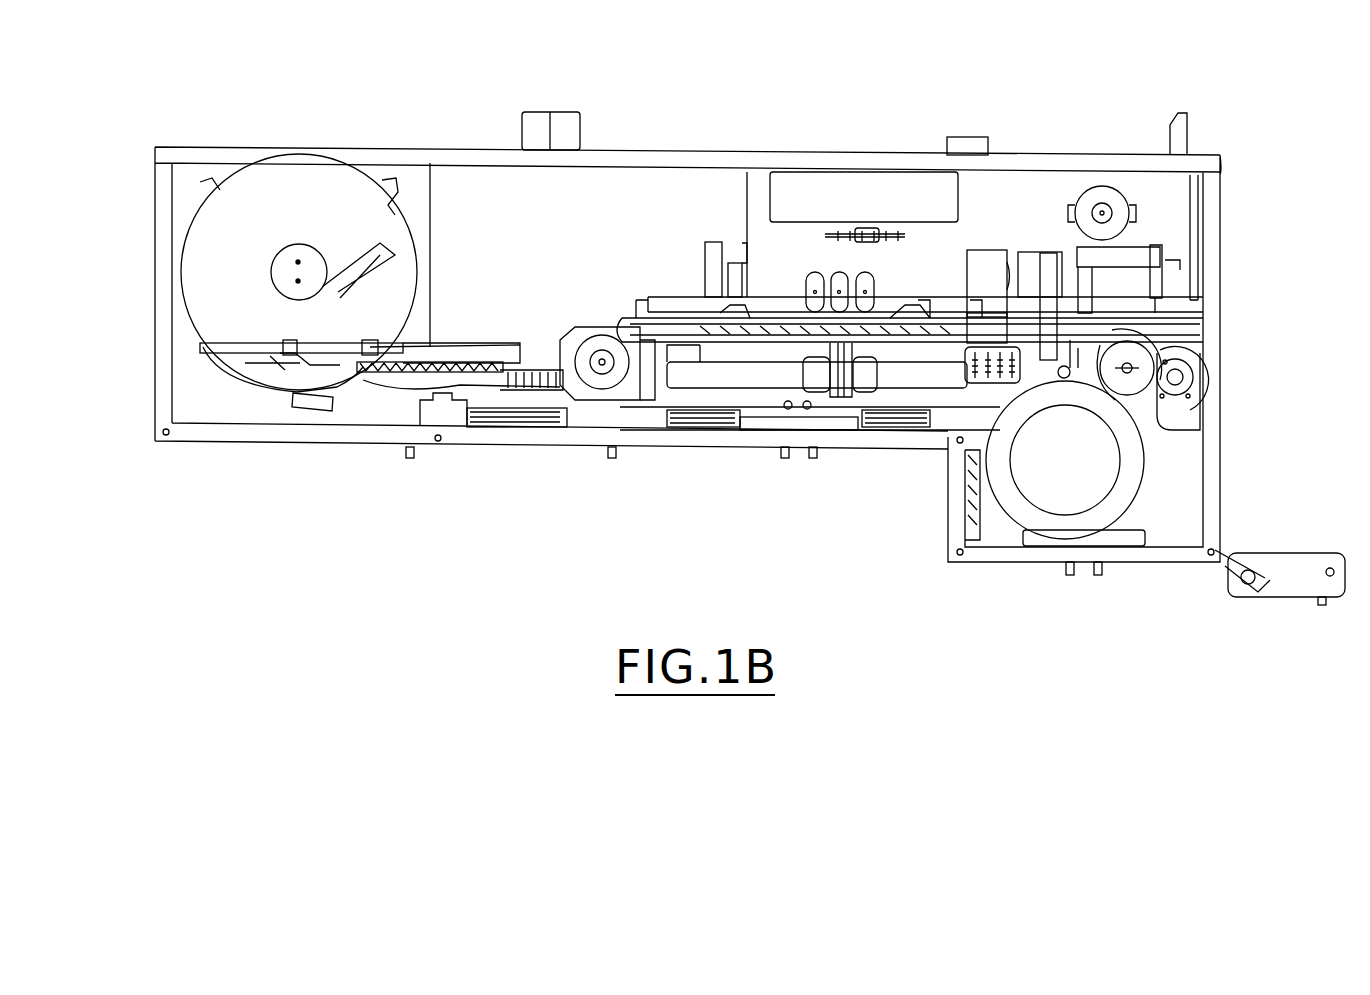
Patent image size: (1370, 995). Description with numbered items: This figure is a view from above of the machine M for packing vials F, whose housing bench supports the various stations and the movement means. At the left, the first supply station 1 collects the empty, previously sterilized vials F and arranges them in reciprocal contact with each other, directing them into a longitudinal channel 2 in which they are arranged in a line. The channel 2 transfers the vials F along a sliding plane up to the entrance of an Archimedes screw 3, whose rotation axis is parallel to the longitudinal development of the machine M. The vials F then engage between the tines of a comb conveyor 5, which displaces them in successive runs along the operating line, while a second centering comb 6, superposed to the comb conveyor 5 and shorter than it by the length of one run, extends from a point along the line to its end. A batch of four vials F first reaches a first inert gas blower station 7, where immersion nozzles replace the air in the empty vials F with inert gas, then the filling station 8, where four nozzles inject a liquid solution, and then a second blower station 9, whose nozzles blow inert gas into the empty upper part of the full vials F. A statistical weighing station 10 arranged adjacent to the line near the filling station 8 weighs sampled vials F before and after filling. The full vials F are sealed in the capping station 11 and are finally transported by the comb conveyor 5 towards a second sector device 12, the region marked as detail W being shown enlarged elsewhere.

The machine M is at (580, 256).
The first supply station 1 is at (190, 335).
The longitudinal channel 2 is at (350, 370).
The Archimedes screw 3 is at (532, 345).
The vials F is at (535, 346).
The comb conveyor 5 is at (628, 330).
The centering comb 6 is at (700, 322).
The first inert gas blower station 7 is at (801, 289).
The filling station 8 is at (829, 272).
The second blower station 9 is at (880, 296).
The statistical weighing station 10 is at (838, 400).
The capping station 11 is at (1037, 238).
The second sector device 12 is at (1132, 355).
The detail W is at (1195, 398).